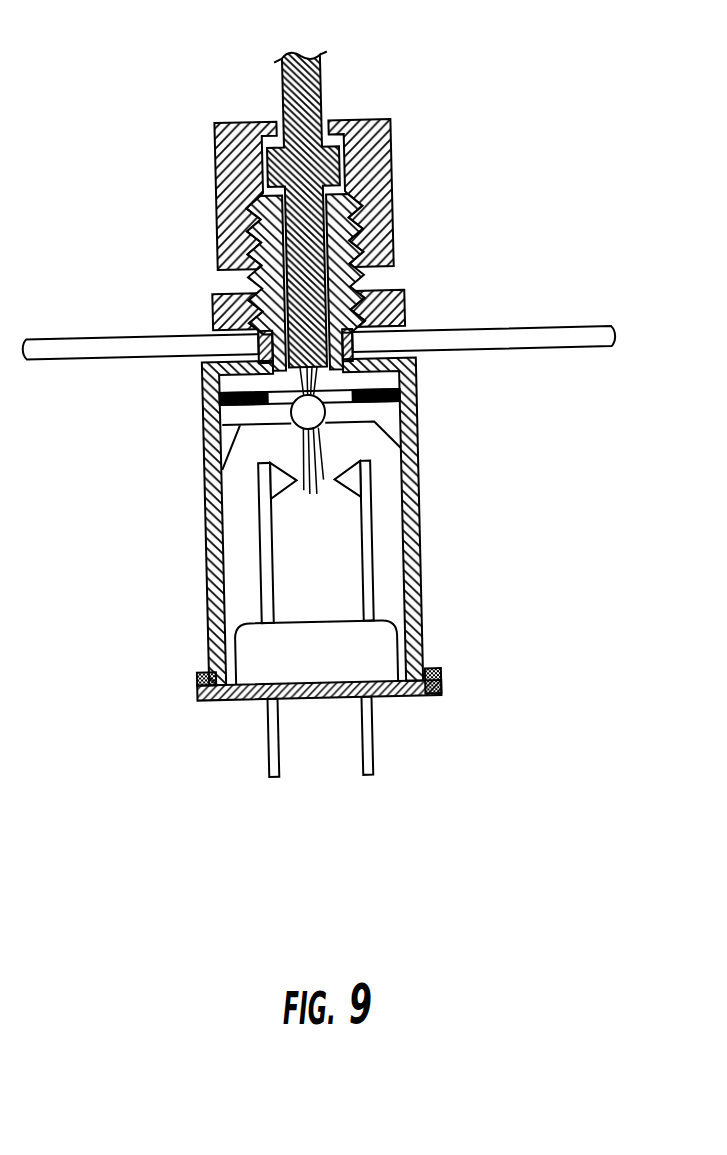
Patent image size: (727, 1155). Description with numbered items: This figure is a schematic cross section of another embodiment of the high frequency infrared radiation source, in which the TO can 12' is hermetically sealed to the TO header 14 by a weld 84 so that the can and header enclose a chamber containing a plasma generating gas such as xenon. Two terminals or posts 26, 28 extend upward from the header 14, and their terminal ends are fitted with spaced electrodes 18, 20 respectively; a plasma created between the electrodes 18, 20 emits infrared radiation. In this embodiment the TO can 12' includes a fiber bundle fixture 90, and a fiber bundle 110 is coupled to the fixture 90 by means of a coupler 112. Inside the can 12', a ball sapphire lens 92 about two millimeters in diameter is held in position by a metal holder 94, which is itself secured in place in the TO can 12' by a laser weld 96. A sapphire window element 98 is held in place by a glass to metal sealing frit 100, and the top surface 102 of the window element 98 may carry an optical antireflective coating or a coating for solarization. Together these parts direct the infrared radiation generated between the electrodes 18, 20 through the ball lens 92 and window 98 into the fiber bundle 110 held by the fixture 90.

The fiber bundle 110 is at (328, 77).
The coupler 112 is at (400, 185).
The fiber bundle fixture 90 is at (248, 268).
The top surface 102 is at (409, 314).
The sapphire window element 98 is at (203, 376).
The TO can 12' is at (355, 521).
The glass to metal sealing frit 100 is at (403, 407).
The laser weld 96 is at (404, 454).
The metal holder 94 is at (224, 423).
The ball sapphire lens 92 is at (310, 412).
The electrode 18 is at (272, 492).
The electrode 20 is at (355, 488).
The post 26 is at (374, 556).
The post 28 is at (270, 574).
The TO header 14 is at (216, 696).
The weld 84 is at (193, 673).